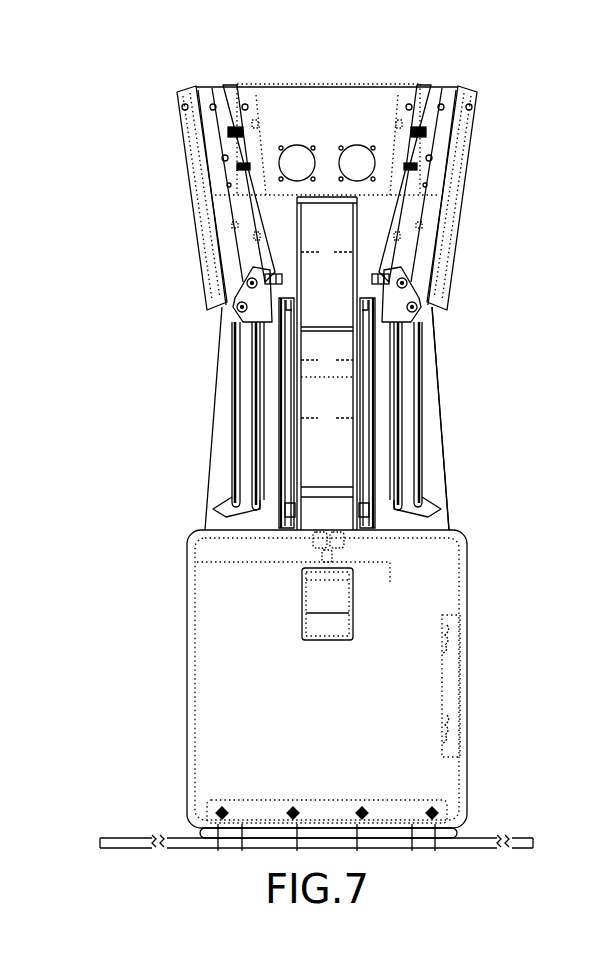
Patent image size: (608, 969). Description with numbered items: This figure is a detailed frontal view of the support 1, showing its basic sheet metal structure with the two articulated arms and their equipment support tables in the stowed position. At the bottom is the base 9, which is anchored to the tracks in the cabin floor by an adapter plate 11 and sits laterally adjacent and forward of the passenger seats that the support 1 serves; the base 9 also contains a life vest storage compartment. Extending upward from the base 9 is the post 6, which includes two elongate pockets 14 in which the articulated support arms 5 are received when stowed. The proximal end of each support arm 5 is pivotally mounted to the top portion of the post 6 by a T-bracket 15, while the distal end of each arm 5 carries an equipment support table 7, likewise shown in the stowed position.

The support 1 is at (185, 471).
The articulated support arm 5 is at (233, 348).
The post 6 is at (437, 387).
The equipment support table 7 is at (287, 492).
The base 9 is at (467, 675).
The adapter plate 11 is at (517, 838).
The elongate pocket 14 is at (225, 433).
The T-bracket 15 is at (261, 117).